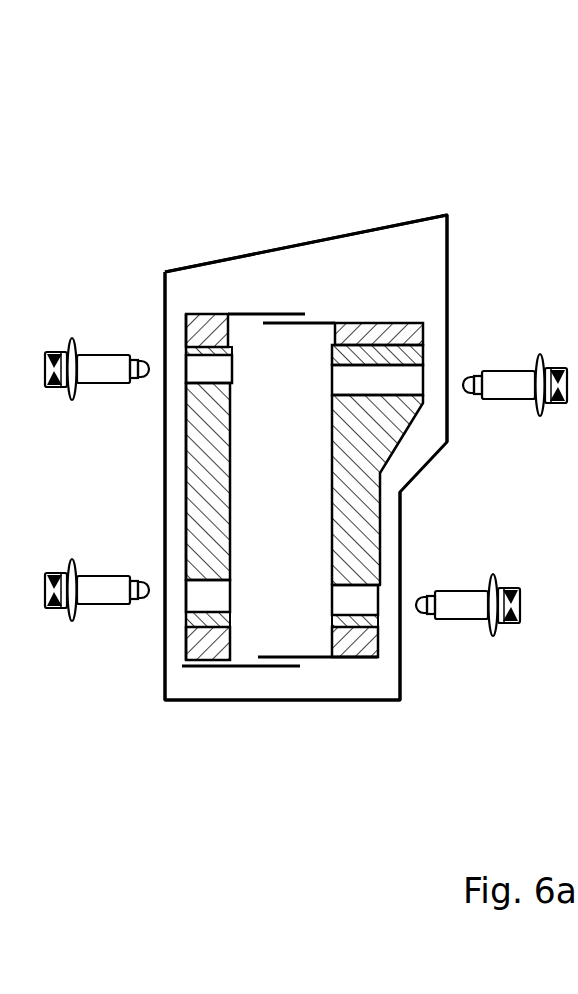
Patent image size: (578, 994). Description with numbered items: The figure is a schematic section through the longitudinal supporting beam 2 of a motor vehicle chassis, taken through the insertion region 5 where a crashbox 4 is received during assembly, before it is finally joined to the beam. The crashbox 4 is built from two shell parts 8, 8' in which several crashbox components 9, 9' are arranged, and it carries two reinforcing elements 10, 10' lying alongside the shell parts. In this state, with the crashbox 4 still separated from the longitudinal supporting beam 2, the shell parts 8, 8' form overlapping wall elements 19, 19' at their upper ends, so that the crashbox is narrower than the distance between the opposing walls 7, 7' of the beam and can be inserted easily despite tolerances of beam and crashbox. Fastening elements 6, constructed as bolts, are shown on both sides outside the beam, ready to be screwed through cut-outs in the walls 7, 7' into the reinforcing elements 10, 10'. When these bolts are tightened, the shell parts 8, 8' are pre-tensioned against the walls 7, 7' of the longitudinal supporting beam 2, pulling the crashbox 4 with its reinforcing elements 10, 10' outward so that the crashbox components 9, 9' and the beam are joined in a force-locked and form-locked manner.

The longitudinal supporting beam 2 is at (257, 700).
The crashbox 4 is at (259, 227).
The insertion region 5 is at (460, 220).
The fastening elements 6 is at (95, 367).
The wall 7 is at (477, 336).
The wall 7' is at (109, 486).
The shell part 8 is at (454, 585).
The shell part 8' is at (120, 487).
The crashbox component 9 is at (356, 721).
The crashbox component 9' is at (199, 719).
The reinforcing element 10 is at (425, 490).
The reinforcing element 10' is at (134, 481).
The overlapping wall element 19 is at (377, 235).
The overlapping wall element 19' is at (187, 229).